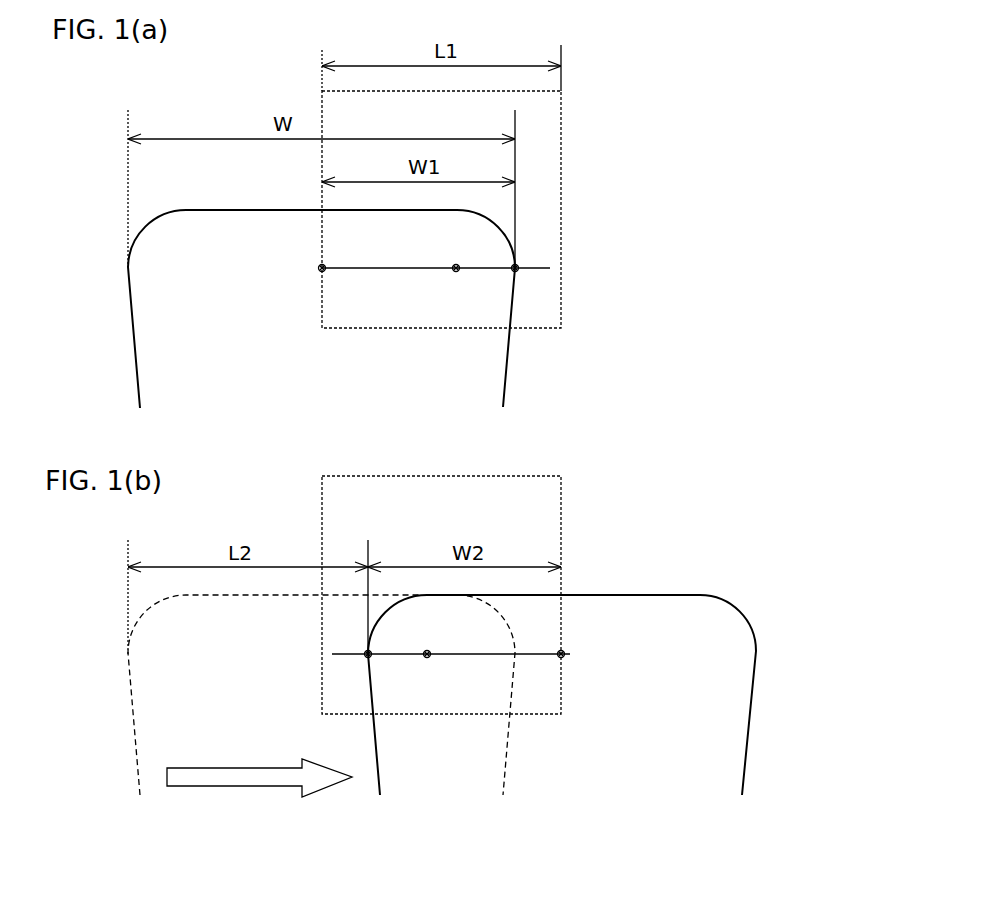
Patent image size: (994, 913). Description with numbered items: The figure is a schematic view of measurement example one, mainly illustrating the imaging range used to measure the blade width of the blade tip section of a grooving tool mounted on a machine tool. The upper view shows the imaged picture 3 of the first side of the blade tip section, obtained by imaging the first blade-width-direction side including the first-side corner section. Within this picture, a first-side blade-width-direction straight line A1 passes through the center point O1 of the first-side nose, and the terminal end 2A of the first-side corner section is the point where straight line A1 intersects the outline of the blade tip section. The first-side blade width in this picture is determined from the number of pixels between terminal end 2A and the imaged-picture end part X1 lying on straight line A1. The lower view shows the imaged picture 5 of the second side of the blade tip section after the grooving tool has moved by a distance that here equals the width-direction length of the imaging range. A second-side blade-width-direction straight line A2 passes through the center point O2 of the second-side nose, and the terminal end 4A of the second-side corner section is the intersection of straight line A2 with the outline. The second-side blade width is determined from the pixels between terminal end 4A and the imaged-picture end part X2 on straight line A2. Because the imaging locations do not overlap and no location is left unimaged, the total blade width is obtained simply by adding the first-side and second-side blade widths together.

The imaged picture of the first side of the blade tip section 3 is at (561, 157).
The imaged picture of the second side of the blade tip section 5 is at (562, 511).
The terminal end of the first-side corner section 2A is at (511, 272).
The terminal end of the second-side corner section 4A is at (365, 659).
The center point of the first-side nose R O1 is at (452, 273).
The center point of the second-side nose R O2 is at (430, 660).
The imaged-picture end part X1 is at (318, 272).
The imaged-picture end part X2 is at (565, 658).
The first-side blade-width-direction straight line A1 is at (388, 270).
The second-side blade-width-direction straight line A2 is at (473, 657).